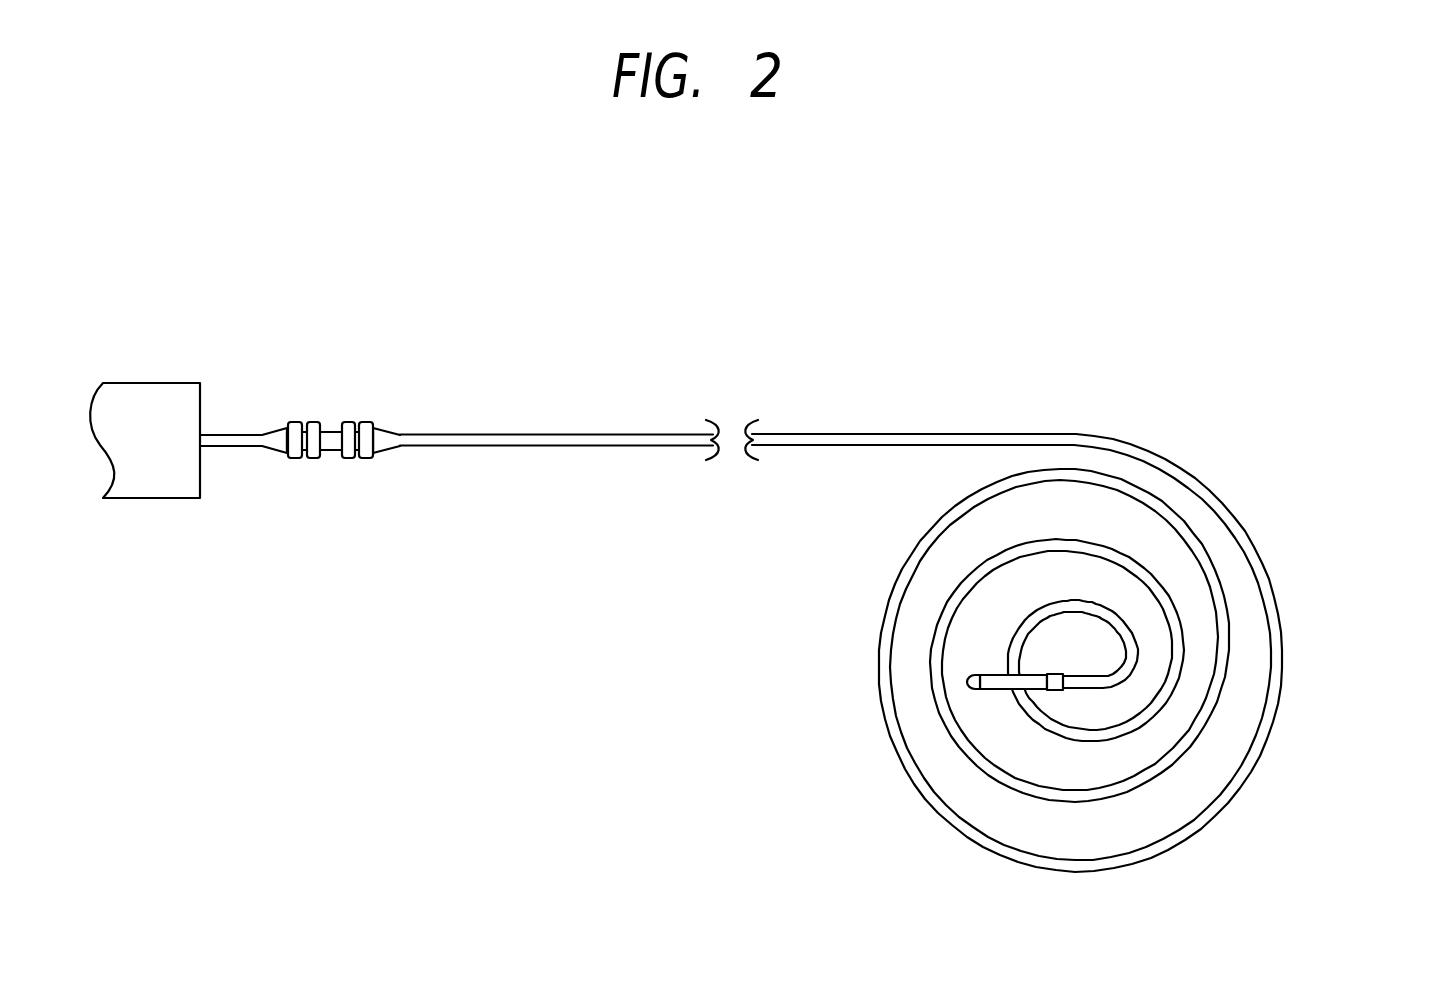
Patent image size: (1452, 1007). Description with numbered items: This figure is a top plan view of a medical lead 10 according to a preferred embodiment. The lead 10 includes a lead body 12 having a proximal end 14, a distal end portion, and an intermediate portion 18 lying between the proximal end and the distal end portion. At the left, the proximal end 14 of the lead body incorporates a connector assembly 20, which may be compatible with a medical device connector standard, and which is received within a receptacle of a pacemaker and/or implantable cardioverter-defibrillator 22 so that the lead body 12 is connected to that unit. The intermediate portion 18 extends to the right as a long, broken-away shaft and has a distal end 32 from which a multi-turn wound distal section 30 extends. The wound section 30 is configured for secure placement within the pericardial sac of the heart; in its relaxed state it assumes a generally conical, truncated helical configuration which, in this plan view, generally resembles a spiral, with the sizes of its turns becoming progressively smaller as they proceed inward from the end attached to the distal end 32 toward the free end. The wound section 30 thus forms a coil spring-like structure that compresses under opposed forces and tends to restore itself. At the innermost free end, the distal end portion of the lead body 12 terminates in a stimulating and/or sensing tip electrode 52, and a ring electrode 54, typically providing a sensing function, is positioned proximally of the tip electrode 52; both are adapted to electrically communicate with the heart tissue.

The medical lead 10 is at (885, 307).
The lead body 12 is at (885, 420).
The proximal end 14 is at (418, 449).
The intermediate portion 18 is at (766, 432).
The connector assembly 20 is at (300, 403).
The pacemaker and/or implantable cardioverter-defibrillator 22 is at (163, 383).
The wound distal section 30 is at (1322, 637).
The distal end 32 is at (1117, 437).
The tip electrode 52 is at (967, 683).
The ring electrode 54 is at (1050, 690).